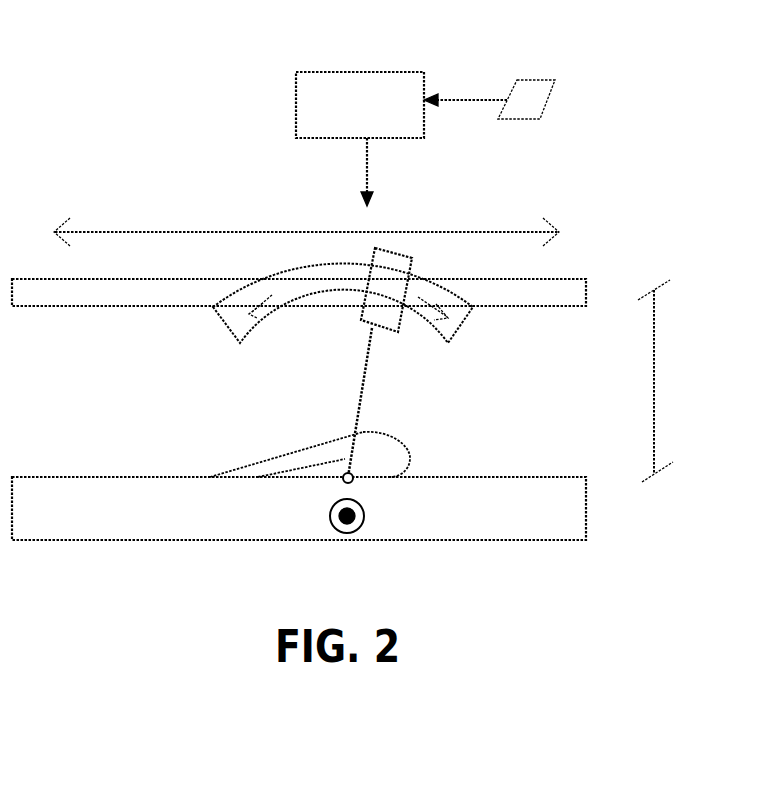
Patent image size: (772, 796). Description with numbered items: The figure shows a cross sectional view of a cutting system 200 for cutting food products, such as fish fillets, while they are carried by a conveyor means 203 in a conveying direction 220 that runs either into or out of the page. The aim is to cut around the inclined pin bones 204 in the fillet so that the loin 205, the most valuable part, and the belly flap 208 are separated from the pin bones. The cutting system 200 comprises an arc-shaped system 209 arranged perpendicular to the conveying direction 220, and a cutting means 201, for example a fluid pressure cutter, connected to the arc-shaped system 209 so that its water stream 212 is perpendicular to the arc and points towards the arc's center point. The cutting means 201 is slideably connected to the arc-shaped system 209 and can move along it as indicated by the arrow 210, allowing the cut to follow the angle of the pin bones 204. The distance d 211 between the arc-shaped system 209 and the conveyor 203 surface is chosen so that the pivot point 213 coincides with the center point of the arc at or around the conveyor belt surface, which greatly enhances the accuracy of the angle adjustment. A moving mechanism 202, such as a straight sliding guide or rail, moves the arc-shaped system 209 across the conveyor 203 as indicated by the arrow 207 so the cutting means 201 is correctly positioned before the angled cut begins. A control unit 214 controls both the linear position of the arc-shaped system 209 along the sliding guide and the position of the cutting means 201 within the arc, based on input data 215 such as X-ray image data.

The cutting system 200 is at (654, 176).
The cutting means 201 is at (383, 272).
The moving mechanism 202 is at (583, 279).
The conveyor means 203 is at (540, 477).
The pin bones 204 is at (343, 458).
The loin 205 is at (390, 445).
The arrow 207 is at (217, 232).
The belly flap 208 is at (262, 470).
The arc-shaped system 209 is at (231, 333).
The arrow 210 is at (333, 292).
The distance d 211 is at (654, 357).
The water stream 212 is at (372, 366).
The pivot point 213 is at (343, 482).
The control unit 214 is at (358, 72).
The input data 215 is at (547, 80).
The conveying direction 220 is at (363, 527).